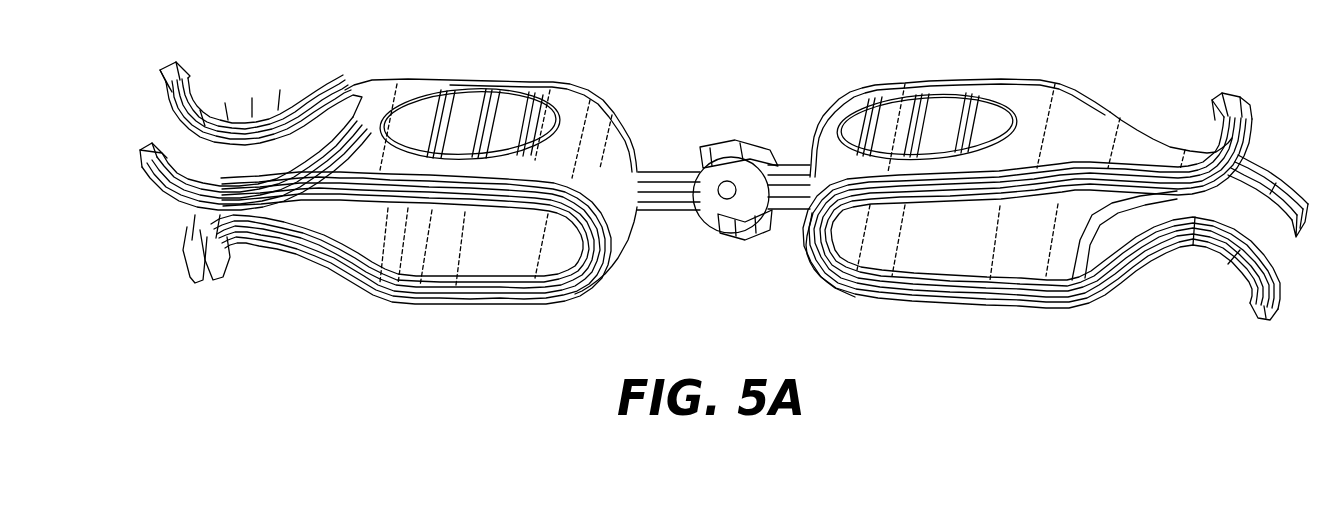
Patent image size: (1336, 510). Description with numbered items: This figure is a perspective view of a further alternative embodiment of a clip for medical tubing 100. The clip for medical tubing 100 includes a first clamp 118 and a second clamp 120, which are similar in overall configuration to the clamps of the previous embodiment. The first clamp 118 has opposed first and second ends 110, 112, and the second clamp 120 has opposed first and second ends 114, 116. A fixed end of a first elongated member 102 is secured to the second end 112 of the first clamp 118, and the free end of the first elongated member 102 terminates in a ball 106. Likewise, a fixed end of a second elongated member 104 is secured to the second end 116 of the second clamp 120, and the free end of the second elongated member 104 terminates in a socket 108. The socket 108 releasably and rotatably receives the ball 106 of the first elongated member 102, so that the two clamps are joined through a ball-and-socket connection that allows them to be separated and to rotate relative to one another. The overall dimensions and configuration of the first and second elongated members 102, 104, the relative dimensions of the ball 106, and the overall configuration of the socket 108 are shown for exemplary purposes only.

The clip for medical tubing 100 is at (147, 108).
The first elongated member 102 is at (650, 170).
The second elongated member 104 is at (790, 165).
The ball 106 is at (700, 210).
The socket 108 is at (744, 230).
The first end of first clamp 110 is at (222, 90).
The second end of first clamp 112 is at (594, 293).
The first end of second clamp 114 is at (1268, 146).
The second end of second clamp 116 is at (828, 288).
The first clamp 118 is at (498, 292).
The second clamp 120 is at (975, 296).